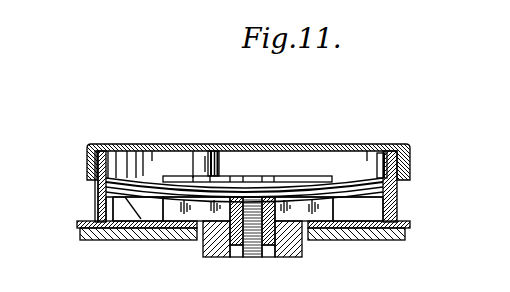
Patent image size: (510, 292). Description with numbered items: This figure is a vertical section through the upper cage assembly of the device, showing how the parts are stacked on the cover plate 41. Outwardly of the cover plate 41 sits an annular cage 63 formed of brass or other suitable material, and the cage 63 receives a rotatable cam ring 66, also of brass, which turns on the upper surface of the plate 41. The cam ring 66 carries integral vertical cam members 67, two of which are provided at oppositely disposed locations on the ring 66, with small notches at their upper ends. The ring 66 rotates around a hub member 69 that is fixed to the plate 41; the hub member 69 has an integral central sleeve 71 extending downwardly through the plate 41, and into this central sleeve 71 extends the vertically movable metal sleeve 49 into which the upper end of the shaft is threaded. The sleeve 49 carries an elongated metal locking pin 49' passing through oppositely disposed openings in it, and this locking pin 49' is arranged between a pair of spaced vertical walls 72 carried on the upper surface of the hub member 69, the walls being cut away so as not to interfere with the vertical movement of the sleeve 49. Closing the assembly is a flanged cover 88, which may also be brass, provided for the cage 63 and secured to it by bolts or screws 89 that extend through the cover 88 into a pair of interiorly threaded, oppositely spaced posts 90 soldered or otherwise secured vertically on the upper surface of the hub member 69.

The flanged cover 88 is at (127, 145).
The bolts or screws 89 is at (207, 146).
The interiorly threaded posts 90 is at (192, 163).
The vertical walls 72 is at (287, 180).
The locking pin 49' is at (244, 162).
The annular cage 63 is at (95, 190).
The cam members 67 is at (95, 211).
The sleeve 49 is at (250, 243).
The central sleeve 71 is at (287, 241).
The hub member 69 is at (308, 243).
The cam ring 66 is at (353, 229).
The cover plate 41 is at (380, 241).